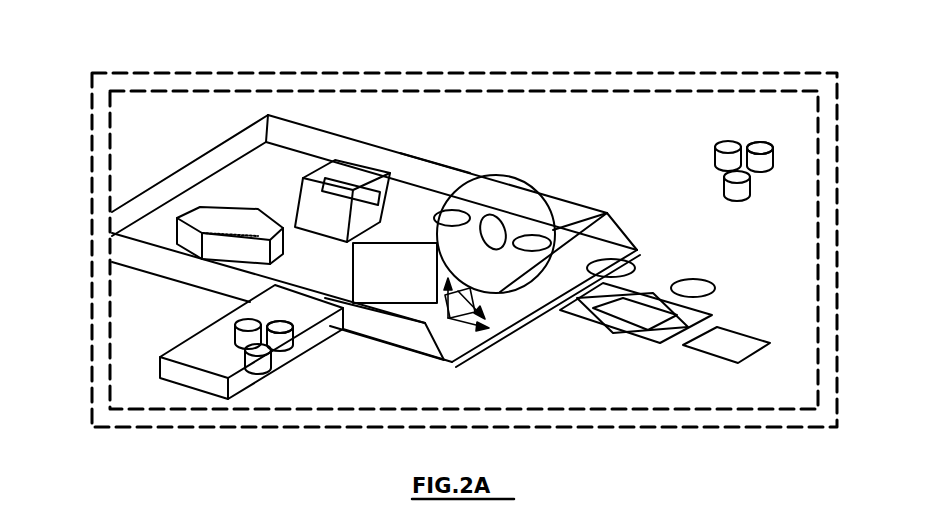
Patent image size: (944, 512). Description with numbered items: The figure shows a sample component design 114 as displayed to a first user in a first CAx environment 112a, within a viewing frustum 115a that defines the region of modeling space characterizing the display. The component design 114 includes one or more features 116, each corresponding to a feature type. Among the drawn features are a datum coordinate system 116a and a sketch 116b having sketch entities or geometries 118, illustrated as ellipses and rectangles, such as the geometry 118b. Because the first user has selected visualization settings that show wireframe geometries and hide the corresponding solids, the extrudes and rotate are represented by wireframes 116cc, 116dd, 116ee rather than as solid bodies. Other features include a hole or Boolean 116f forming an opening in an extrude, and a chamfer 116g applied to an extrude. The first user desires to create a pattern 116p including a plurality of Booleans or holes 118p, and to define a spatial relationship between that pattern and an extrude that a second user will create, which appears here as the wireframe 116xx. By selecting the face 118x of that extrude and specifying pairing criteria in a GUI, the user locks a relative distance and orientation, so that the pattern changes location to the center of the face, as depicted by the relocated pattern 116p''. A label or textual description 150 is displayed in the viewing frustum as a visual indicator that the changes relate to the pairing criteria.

The first CAx environment 112a is at (235, 72).
The viewing frustum 115a is at (143, 90).
The component design 114 is at (203, 152).
The hole or Boolean 116f is at (222, 206).
The wireframe 116dd is at (370, 170).
The wireframe 116cc is at (432, 162).
The wireframe 116ee is at (524, 172).
The sketch entity or geometry 118b is at (533, 192).
The feature 116 is at (678, 282).
The pattern 116p is at (702, 150).
The Booleans or holes 118p is at (742, 148).
The sketch 116b is at (722, 312).
The sketch entities or geometries 118 is at (523, 322).
The label or textual description 150 is at (353, 257).
The wireframe 116xx is at (215, 322).
The pattern 116p'' is at (205, 332).
The face 118x is at (292, 326).
The datum coordinate system 116a is at (434, 354).
The chamfer 116g is at (442, 356).